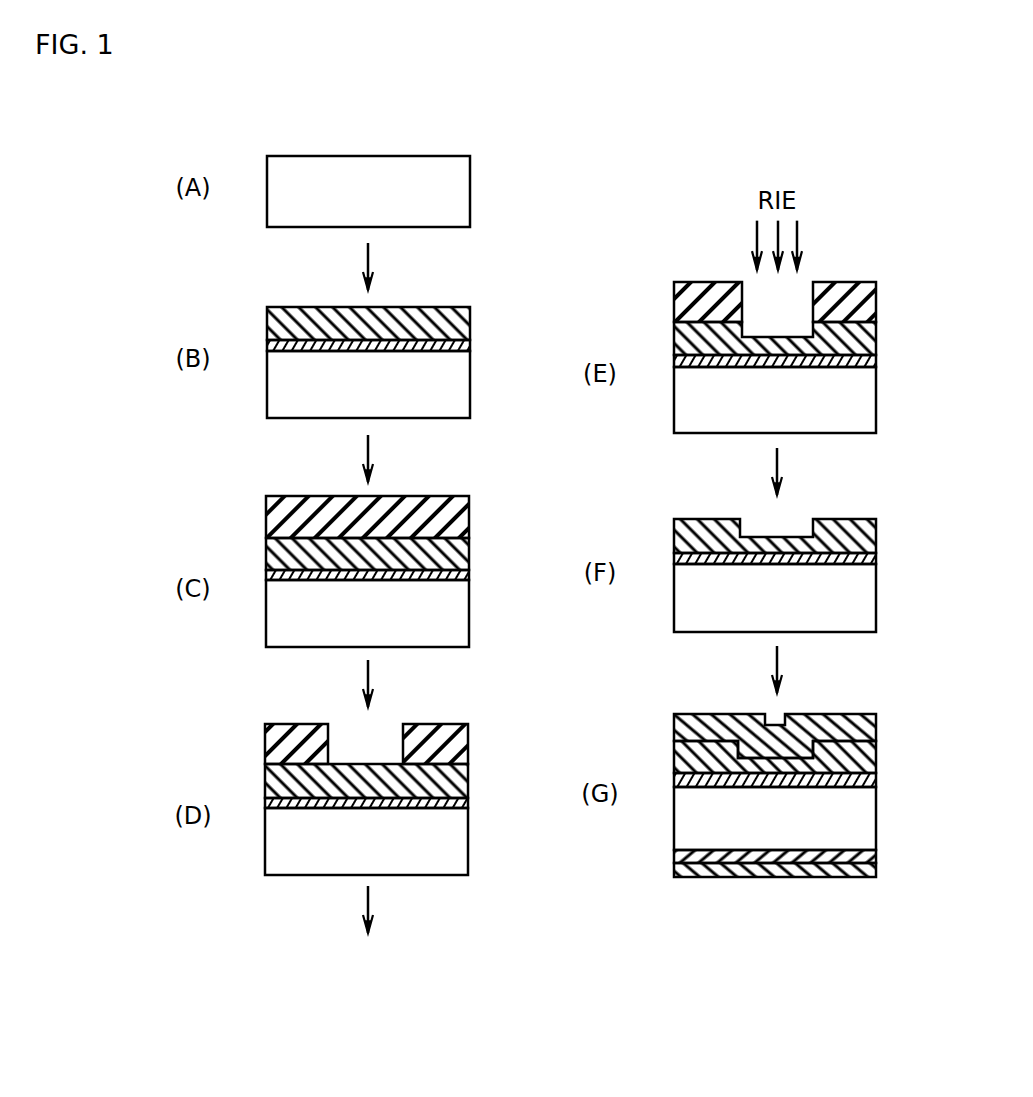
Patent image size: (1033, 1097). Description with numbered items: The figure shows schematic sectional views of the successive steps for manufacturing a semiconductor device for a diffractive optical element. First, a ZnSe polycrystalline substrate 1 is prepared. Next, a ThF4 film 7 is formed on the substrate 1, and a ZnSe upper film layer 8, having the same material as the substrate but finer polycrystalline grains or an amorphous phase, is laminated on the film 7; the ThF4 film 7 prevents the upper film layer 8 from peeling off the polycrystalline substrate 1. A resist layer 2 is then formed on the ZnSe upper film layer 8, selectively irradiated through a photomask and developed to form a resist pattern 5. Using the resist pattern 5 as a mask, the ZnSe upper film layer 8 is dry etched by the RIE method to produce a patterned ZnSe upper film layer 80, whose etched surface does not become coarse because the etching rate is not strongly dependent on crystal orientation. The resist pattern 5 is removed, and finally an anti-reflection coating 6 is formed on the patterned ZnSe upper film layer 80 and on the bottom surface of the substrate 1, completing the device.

The ZnSe polycrystalline substrate 1 is at (440, 187).
The ThF4 film 7 is at (445, 348).
The ZnSe upper film layer 8 is at (445, 320).
The resist layer 2 is at (445, 518).
The resist pattern 5 is at (445, 745).
The patterned ZnSe upper film layer 80 is at (853, 337).
The anti-reflection coating 6 is at (878, 730).